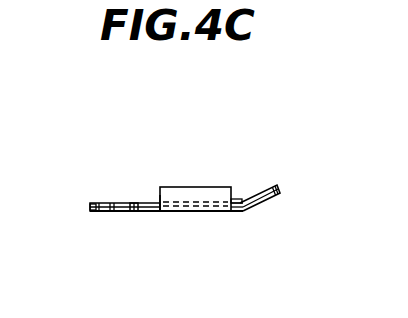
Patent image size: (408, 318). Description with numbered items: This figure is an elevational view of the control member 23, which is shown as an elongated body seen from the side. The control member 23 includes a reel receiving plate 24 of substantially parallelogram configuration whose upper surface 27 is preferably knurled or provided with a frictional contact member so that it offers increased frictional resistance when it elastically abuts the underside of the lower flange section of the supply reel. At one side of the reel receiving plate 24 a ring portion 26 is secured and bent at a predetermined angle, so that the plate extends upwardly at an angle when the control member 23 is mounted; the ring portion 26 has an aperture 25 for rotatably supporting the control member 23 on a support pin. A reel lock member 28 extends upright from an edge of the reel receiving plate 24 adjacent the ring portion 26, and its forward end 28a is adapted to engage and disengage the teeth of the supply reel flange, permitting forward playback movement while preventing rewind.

The control member 23 is at (250, 150).
The reel receiving plate 24 is at (110, 212).
The aperture 25 is at (268, 185).
The ring portion 26 is at (265, 200).
The upper surface 27 is at (113, 203).
The reel lock member 28 is at (199, 197).
The forward end 28a is at (160, 198).